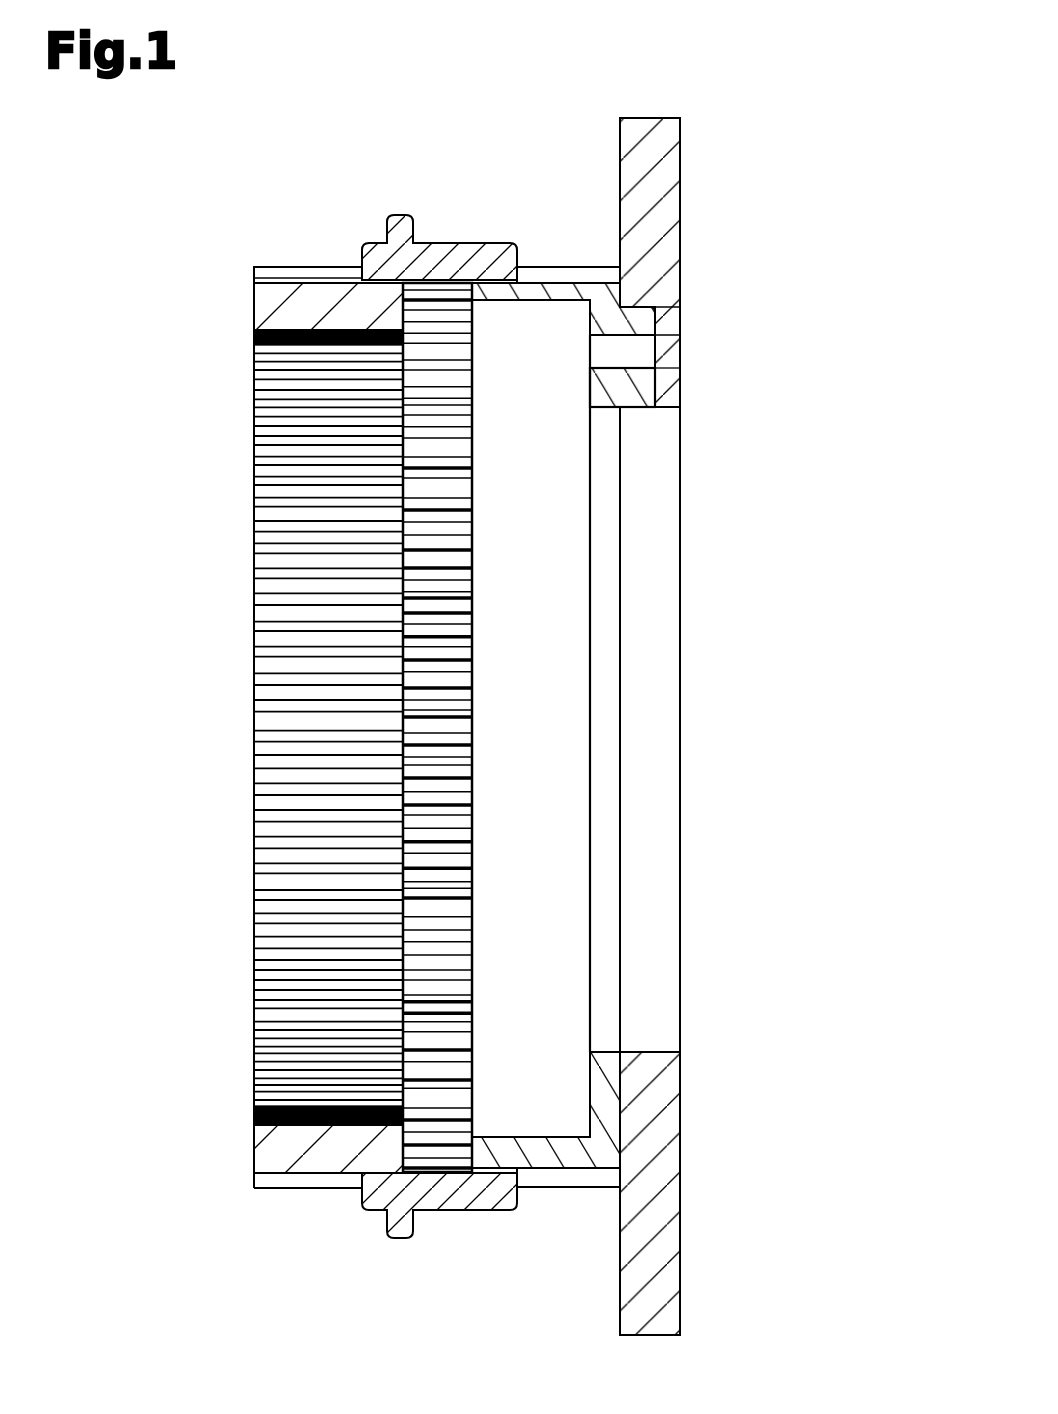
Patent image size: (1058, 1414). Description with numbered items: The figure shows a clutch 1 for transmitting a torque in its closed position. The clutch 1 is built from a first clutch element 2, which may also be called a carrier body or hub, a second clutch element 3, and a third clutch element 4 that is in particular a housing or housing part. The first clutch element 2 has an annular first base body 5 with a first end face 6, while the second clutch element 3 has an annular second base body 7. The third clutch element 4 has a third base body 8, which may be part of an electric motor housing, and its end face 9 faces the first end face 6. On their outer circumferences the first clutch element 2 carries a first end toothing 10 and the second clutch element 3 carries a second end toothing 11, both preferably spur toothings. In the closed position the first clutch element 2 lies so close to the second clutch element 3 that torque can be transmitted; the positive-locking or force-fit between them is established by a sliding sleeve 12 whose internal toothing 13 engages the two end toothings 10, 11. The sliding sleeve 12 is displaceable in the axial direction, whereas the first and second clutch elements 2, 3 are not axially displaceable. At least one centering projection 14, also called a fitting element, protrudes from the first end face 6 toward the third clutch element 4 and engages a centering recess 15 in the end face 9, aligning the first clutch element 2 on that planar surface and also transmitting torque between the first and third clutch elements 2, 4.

The clutch 1 is at (793, 107).
The first clutch element 2 is at (574, 250).
The second clutch element 3 is at (323, 253).
The third clutch element 4 is at (663, 107).
The first base body 5 is at (567, 1187).
The first end face 6 is at (620, 832).
The second base body 7 is at (247, 282).
The third base body 8 is at (680, 150).
The end face 9 is at (618, 183).
The first end toothing 10 is at (547, 250).
The second end toothing 11 is at (288, 270).
The sliding sleeve 12 is at (443, 1225).
The internal toothing 13 is at (387, 1163).
The centering projection 14 is at (672, 313).
The centering recess 15 is at (678, 385).